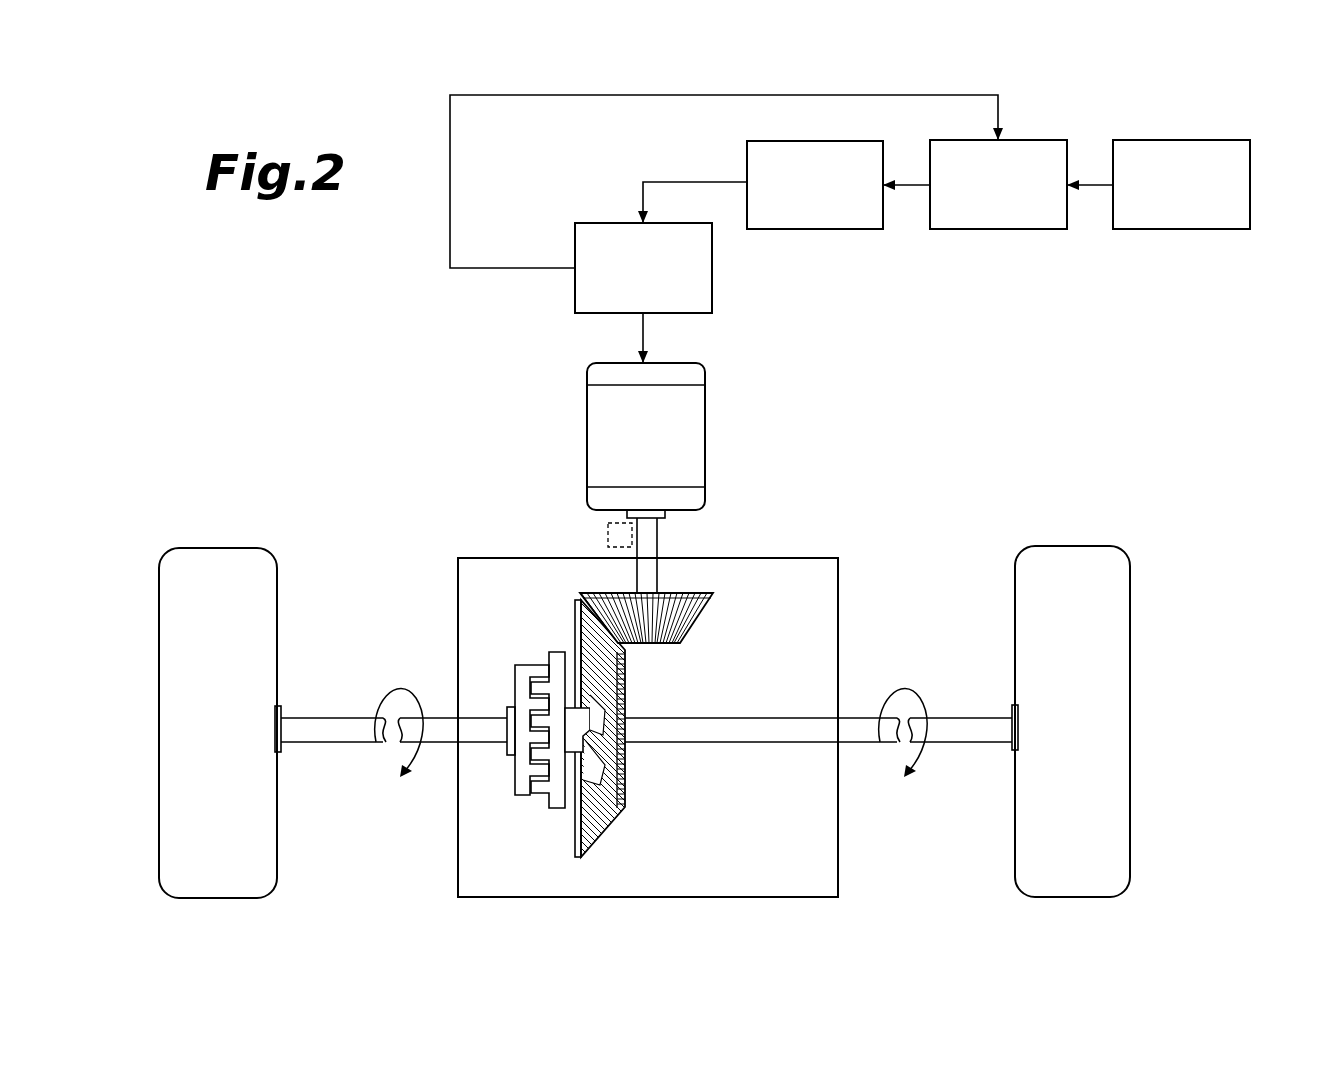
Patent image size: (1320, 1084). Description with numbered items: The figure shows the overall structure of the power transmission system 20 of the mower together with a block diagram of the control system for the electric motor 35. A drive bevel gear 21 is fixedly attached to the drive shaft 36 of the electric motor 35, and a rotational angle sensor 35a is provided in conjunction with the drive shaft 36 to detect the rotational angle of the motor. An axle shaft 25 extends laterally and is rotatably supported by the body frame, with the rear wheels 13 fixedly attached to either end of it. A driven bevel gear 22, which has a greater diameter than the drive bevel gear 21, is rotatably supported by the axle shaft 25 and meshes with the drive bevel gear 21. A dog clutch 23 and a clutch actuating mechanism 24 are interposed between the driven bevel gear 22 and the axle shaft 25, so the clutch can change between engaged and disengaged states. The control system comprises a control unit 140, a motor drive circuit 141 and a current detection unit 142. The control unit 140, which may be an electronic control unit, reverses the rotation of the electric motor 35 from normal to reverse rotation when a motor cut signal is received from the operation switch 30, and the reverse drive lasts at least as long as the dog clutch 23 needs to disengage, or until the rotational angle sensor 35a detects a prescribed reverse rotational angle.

The rear wheel 13 is at (216, 562).
The power transmission system 20 is at (793, 558).
The drive bevel gear 21 is at (700, 622).
The driven bevel gear 22 is at (617, 818).
The dog clutch 23 is at (539, 648).
The clutch actuating mechanism 24 is at (583, 742).
The axle shaft 25 is at (487, 733).
The operation switch 30 is at (1185, 230).
The electric motor 35 is at (705, 437).
The rotational angle sensor 35a is at (608, 538).
The drive shaft 36 is at (657, 537).
The control unit 140 is at (1000, 230).
The motor drive circuit 141 is at (811, 230).
The current detection unit 142 is at (590, 222).